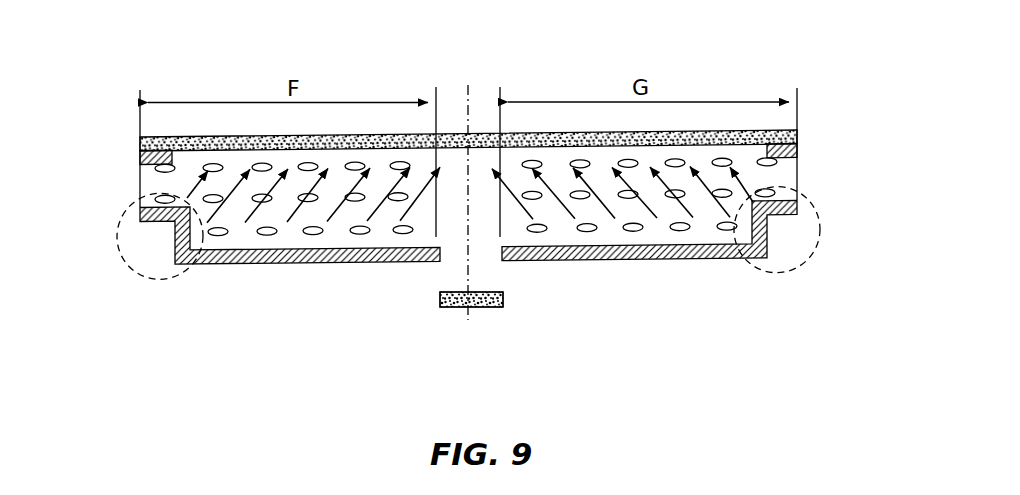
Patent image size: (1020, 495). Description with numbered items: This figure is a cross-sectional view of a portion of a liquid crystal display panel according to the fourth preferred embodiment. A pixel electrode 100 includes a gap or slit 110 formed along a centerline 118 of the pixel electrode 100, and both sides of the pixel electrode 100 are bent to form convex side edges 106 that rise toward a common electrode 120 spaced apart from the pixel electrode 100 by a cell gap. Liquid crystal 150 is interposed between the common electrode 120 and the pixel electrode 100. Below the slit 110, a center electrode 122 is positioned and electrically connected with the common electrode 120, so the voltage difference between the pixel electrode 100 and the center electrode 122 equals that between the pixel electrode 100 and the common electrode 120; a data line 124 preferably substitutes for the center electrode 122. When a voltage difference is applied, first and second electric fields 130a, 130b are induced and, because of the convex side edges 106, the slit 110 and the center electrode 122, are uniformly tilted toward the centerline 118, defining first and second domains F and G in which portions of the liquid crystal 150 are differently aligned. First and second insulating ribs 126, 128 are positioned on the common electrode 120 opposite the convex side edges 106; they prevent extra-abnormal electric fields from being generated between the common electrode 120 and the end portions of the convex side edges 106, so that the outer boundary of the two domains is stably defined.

The pixel electrode 100 is at (312, 265).
The convex side edges 106 is at (162, 277).
The gap or slit 110 is at (448, 255).
The centerline 118 is at (468, 89).
The common electrode 120 is at (797, 137).
The center electrode 122 is at (492, 310).
The data line 124 is at (507, 354).
The first insulating rib 126 is at (140, 156).
The second insulating rib 128 is at (797, 152).
The first electric field 130a is at (260, 236).
The second electric field 130b is at (688, 233).
The liquid crystal 150 is at (634, 233).